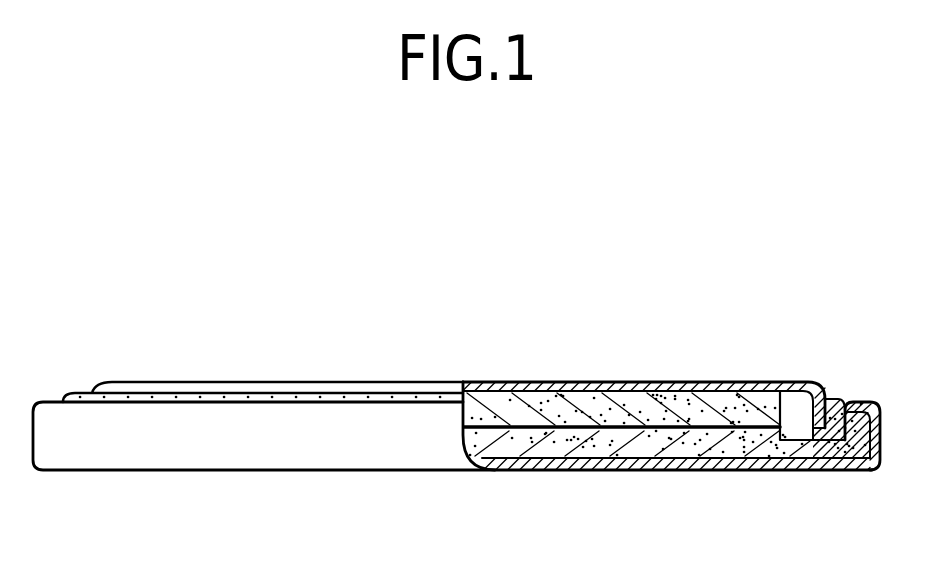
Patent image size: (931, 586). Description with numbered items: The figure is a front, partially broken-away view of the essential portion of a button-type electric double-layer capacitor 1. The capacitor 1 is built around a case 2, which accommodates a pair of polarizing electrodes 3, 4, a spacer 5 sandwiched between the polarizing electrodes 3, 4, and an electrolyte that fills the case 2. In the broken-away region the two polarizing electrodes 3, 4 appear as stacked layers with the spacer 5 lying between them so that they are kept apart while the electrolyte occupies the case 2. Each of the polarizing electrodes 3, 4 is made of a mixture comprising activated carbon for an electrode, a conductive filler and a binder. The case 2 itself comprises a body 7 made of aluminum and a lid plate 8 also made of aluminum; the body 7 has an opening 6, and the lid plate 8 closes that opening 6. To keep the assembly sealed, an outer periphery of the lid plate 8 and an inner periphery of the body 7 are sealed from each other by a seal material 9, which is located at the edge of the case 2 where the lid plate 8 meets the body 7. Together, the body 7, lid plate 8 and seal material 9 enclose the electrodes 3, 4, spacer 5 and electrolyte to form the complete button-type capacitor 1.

The button-type electric double-layer capacitor 1 is at (503, 377).
The case 2 is at (702, 381).
The polarizing electrode 3 is at (603, 400).
The polarizing electrode 4 is at (596, 442).
The spacer 5 is at (518, 452).
The opening 6 is at (837, 397).
The body 7 is at (725, 472).
The lid plate 8 is at (550, 385).
The seal material 9 is at (857, 460).